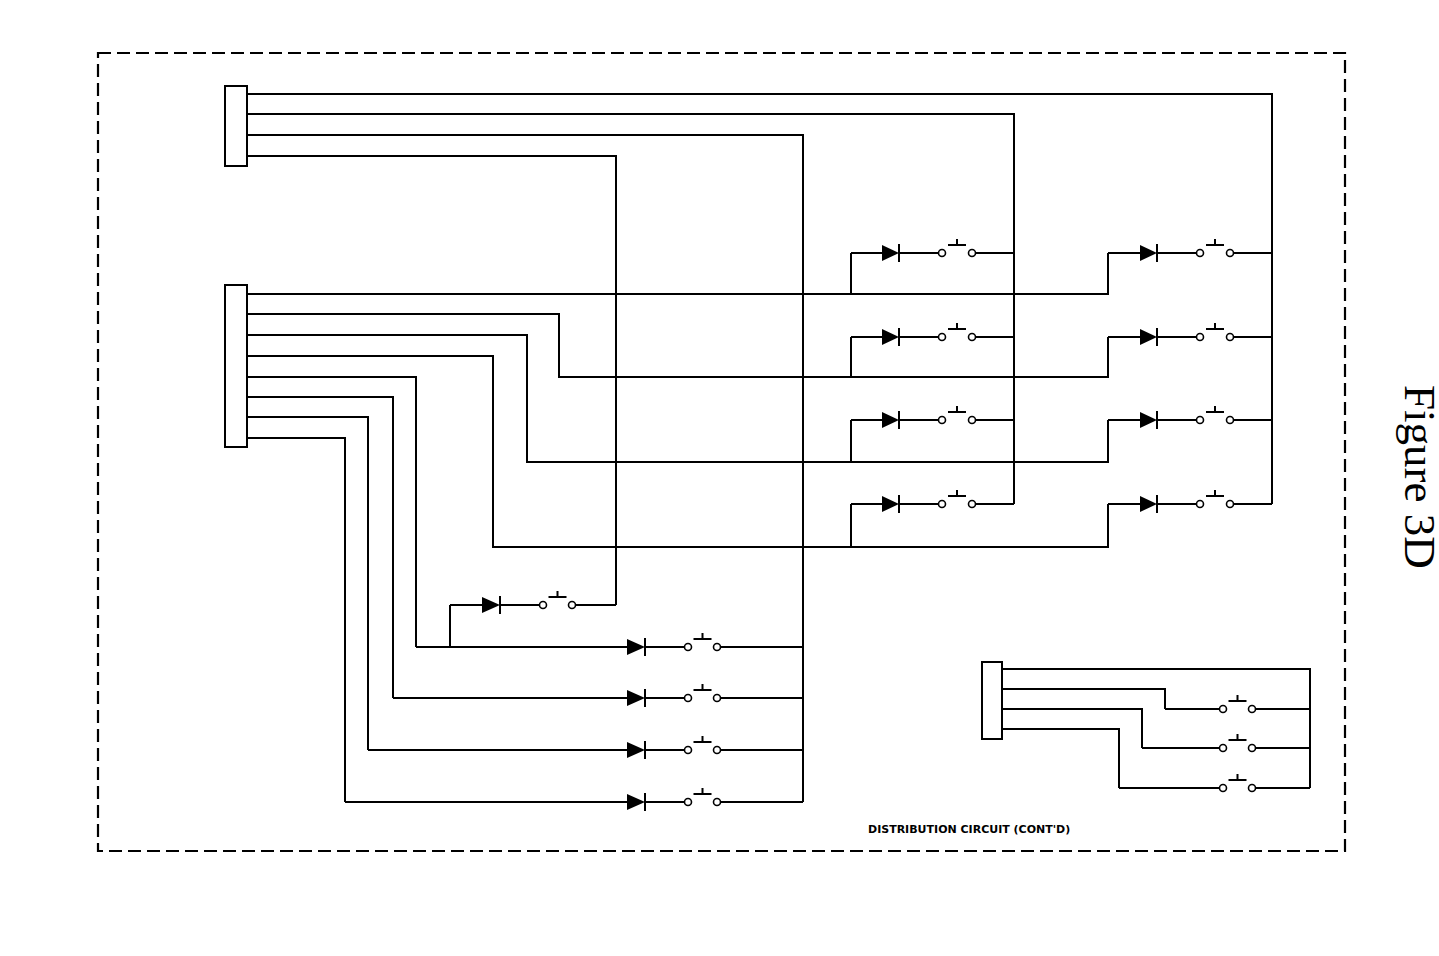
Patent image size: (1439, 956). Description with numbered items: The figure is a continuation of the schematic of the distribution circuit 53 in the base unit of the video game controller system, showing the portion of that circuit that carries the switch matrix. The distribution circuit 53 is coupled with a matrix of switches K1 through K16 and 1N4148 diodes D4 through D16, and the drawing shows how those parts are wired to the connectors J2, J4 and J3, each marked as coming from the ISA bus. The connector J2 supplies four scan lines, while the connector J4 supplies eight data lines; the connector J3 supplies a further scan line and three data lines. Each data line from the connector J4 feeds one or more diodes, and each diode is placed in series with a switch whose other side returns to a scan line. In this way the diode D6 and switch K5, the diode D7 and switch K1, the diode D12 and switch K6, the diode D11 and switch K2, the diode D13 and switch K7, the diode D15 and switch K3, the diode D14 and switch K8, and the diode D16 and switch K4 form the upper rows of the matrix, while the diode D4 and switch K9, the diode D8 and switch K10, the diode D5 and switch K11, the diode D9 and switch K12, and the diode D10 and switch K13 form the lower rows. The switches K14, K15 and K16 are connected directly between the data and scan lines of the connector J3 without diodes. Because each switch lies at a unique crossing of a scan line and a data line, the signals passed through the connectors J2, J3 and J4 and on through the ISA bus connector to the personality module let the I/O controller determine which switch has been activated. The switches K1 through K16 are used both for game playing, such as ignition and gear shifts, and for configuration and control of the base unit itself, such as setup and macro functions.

The distribution circuit 53 is at (1335, 171).
The connector J2 is at (223, 123).
The connector J3 is at (963, 697).
The connector J4 is at (222, 363).
The 1N4148 diode D4 is at (489, 606).
The 1N4148 diode D5 is at (634, 699).
The 1N4148 diode D6 is at (888, 254).
The 1N4148 diode D7 is at (1146, 254).
The 1N4148 diode D8 is at (634, 648).
The 1N4148 diode D9 is at (634, 751).
The 1N4148 diode D10 is at (634, 803).
The 1N4148 diode D11 is at (1146, 338).
The 1N4148 diode D12 is at (888, 338).
The 1N4148 diode D13 is at (888, 421).
The 1N4148 diode D14 is at (888, 505).
The 1N4148 diode D15 is at (1146, 421).
The 1N4148 diode D16 is at (1146, 505).
The switch K1 is at (1215, 241).
The switch K2 is at (1215, 325).
The switch K3 is at (1215, 408).
The switch K4 is at (1215, 492).
The switch K5 is at (957, 241).
The switch K6 is at (957, 325).
The switch K7 is at (957, 408).
The switch K8 is at (957, 492).
The switch K9 is at (558, 593).
The switch K10 is at (703, 635).
The switch K11 is at (703, 686).
The switch K12 is at (703, 738).
The switch K13 is at (703, 790).
The switch K14 is at (1238, 697).
The switch K15 is at (1238, 736).
The switch K16 is at (1238, 776).